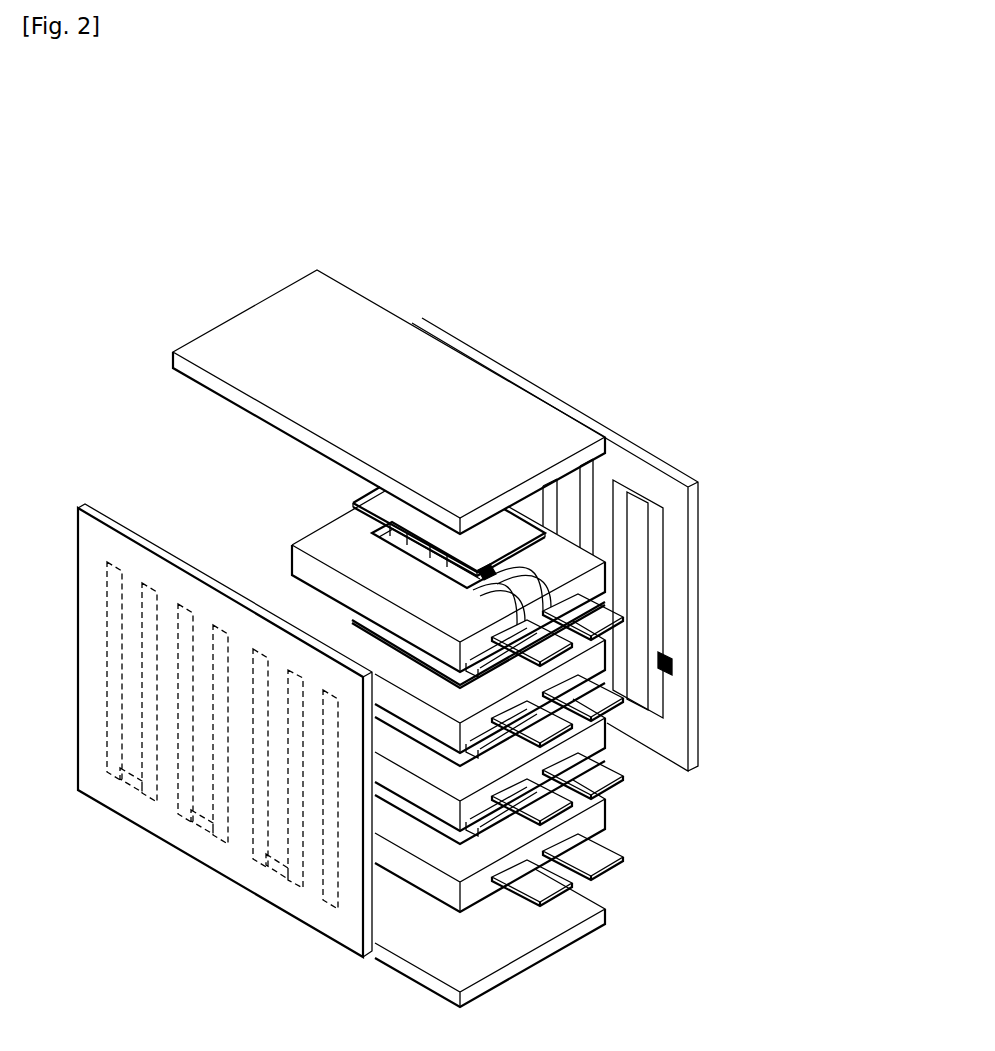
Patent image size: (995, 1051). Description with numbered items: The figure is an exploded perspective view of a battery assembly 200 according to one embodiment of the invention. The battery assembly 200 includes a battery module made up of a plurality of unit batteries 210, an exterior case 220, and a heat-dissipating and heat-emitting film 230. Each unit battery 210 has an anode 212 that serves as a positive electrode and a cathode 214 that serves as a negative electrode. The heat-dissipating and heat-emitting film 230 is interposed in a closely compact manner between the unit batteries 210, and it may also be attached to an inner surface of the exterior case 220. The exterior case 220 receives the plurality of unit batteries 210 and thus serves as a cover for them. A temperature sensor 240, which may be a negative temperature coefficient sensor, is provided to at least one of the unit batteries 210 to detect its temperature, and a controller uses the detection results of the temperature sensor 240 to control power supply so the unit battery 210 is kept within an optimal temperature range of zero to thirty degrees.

The battery assembly 200 is at (132, 187).
The unit battery 210 is at (577, 553).
The anode 212 is at (595, 620).
The cathode 214 is at (580, 658).
The exterior case 220 is at (693, 752).
The heat-dissipating and heat-emitting film 230 is at (357, 537).
The temperature sensor 240 is at (483, 572).